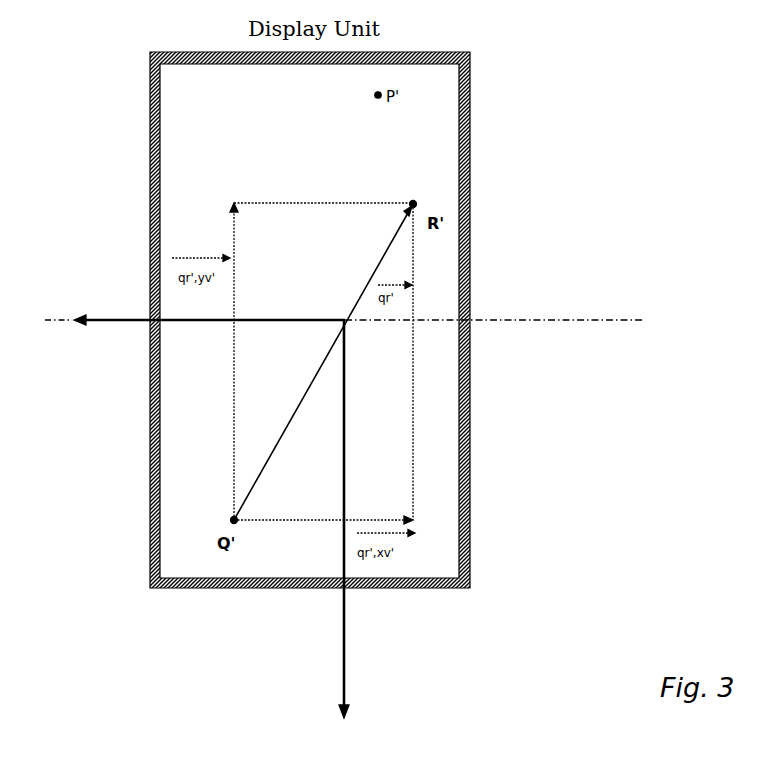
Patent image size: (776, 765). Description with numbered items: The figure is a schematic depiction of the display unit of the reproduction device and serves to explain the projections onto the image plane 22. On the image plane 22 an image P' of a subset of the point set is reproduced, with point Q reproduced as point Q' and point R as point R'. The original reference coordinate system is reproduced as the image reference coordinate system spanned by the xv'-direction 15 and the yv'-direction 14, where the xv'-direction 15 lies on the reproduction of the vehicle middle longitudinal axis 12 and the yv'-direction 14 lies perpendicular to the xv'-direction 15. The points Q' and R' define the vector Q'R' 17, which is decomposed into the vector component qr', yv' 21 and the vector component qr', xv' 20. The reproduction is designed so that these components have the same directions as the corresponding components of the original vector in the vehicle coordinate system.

The image plane 22 is at (223, 130).
The qr', yv' vector component 21 is at (232, 238).
The xv'-direction reference coordinate system 15 is at (205, 322).
The vector Q'R' 17 is at (397, 238).
The vehicle middle longitudinal axis 12 is at (493, 322).
The qr', xv' vector component 20 is at (373, 518).
The yv'-direction reference coordinate system 14 is at (348, 604).